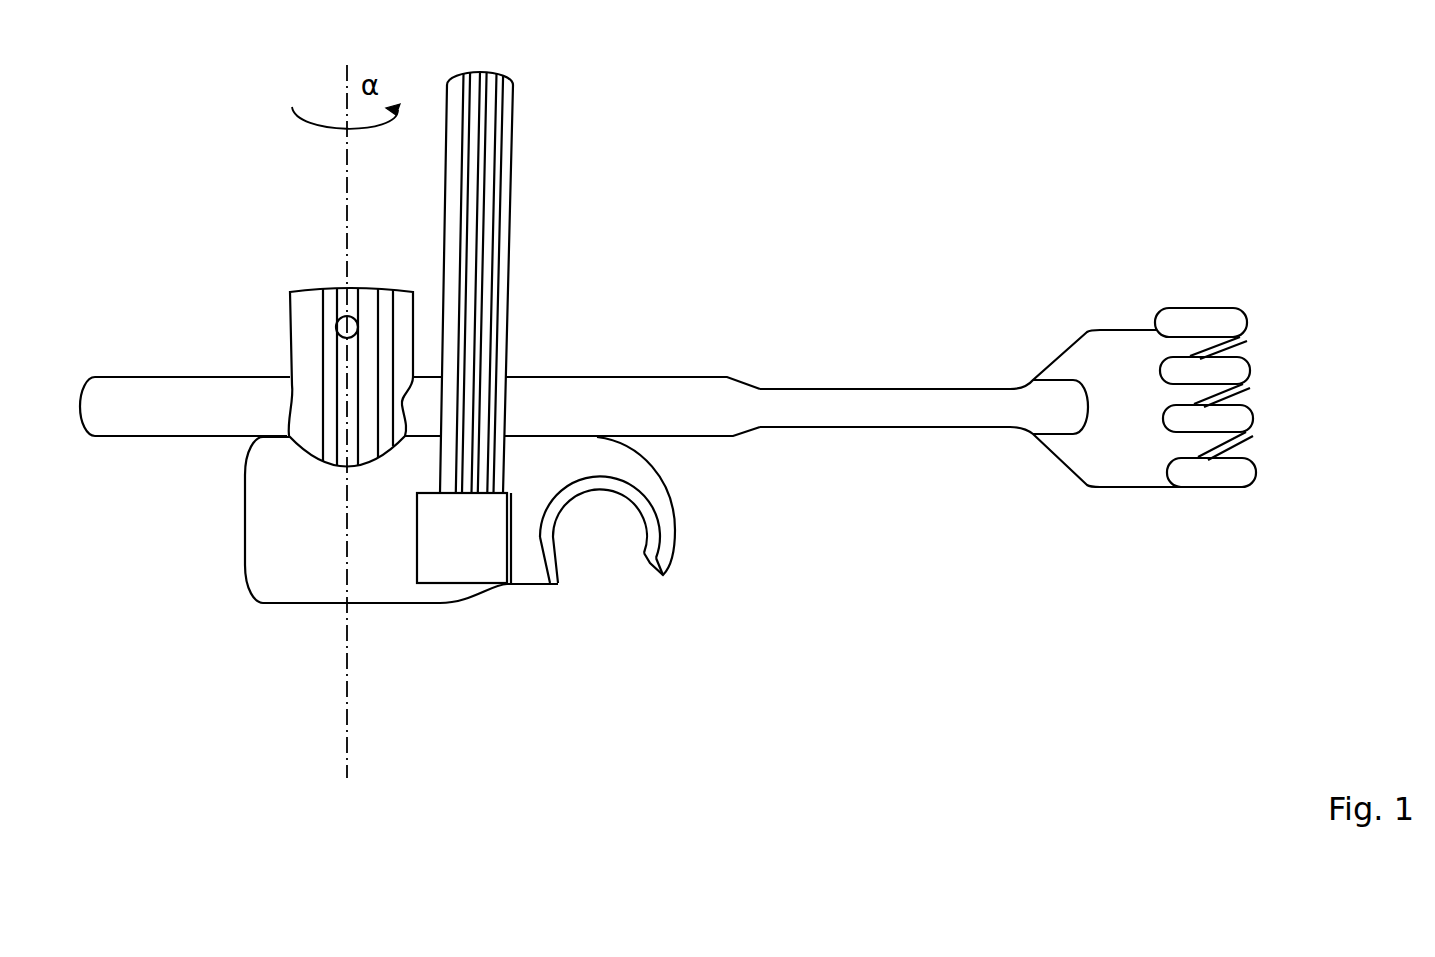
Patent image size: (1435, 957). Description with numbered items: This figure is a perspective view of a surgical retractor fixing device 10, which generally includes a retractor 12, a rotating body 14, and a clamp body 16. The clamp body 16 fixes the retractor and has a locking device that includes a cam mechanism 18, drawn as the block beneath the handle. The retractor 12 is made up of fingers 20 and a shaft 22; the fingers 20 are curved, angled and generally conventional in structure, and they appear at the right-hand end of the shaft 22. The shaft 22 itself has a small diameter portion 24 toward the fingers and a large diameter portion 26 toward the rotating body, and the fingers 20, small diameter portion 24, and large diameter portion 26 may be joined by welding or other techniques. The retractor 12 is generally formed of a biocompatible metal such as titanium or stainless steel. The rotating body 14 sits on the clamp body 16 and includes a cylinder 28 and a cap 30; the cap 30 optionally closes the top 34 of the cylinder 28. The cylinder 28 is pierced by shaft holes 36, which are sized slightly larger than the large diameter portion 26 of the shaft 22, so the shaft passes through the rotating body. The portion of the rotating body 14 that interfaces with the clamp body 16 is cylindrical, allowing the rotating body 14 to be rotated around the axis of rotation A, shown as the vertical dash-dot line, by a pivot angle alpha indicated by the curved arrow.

The surgical retractor fixing device 10 is at (1006, 167).
The retractor 12 is at (630, 383).
The rotating body 14 is at (312, 309).
The clamp body 16 is at (382, 581).
The cam mechanism 18 is at (485, 563).
The fingers 20 is at (1230, 322).
The shaft 22 is at (650, 380).
The small diameter portion 24 is at (878, 388).
The large diameter portion 26 is at (570, 377).
The cylinder 28 is at (298, 338).
The cap 30 is at (368, 288).
The top 34 is at (305, 309).
The shaft holes 36 is at (283, 436).
The axis of rotation A is at (348, 741).